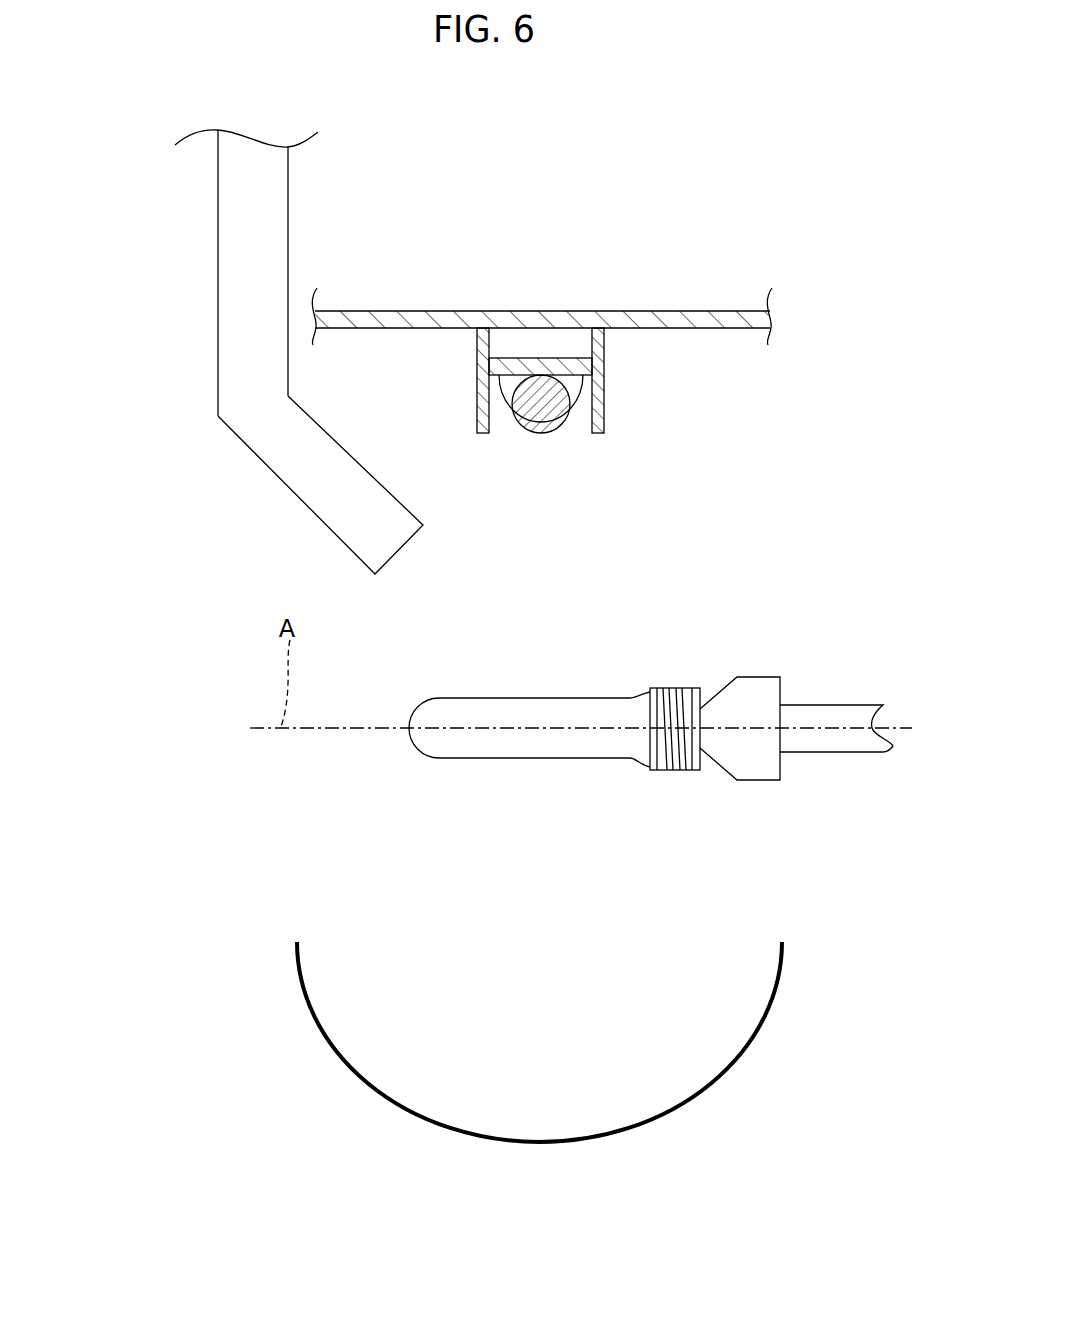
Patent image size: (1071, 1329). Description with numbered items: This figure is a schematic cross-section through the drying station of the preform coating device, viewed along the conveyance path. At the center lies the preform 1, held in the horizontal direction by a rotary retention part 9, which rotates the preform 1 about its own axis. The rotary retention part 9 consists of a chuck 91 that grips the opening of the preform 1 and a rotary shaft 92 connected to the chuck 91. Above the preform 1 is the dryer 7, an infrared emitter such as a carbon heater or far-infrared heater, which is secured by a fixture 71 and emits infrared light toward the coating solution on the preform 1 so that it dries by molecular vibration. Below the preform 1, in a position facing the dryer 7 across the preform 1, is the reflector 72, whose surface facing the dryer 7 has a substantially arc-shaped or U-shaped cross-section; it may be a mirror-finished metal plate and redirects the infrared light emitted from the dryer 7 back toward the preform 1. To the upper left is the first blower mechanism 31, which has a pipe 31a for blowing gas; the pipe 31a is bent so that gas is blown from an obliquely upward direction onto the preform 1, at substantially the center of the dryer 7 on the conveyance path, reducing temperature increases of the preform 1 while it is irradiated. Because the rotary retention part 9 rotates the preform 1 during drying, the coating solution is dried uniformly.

The first blower mechanism 31 is at (240, 352).
The pipe 31a is at (260, 437).
The fixture 71 is at (677, 311).
The dryer 7 is at (557, 432).
The preform 1 is at (560, 760).
The rotary retention part 9 is at (796, 739).
The chuck 91 is at (758, 780).
The rotary shaft 92 is at (850, 753).
The reflector 72 is at (370, 1087).